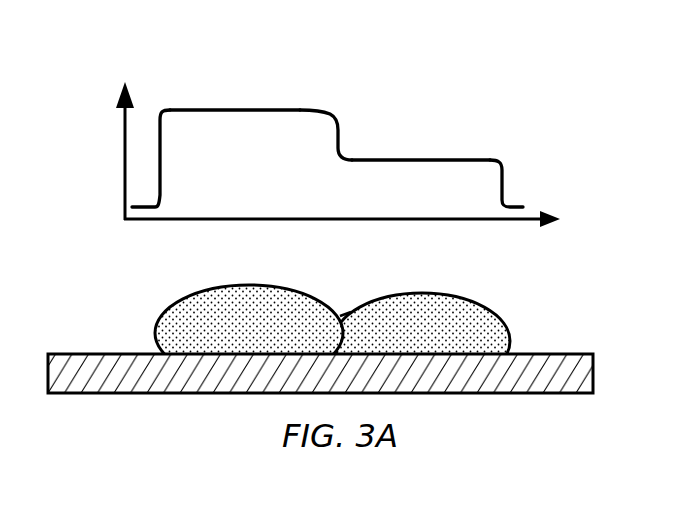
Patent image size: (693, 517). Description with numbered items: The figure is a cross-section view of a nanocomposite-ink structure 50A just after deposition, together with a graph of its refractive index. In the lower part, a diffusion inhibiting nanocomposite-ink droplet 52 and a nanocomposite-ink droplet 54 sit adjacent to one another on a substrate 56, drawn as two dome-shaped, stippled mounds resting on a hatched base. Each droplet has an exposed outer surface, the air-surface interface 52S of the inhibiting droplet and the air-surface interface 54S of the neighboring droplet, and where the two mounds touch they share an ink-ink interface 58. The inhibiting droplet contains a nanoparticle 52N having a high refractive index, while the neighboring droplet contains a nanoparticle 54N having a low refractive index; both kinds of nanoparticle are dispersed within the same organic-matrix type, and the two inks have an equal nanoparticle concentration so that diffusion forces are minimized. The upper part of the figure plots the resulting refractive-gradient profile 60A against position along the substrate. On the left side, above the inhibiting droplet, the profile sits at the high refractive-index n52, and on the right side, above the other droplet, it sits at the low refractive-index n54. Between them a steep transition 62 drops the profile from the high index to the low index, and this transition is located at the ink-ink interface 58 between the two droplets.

The nanocomposite-ink structure 50A is at (603, 116).
The diffusion inhibiting nanocomposite-ink droplet 52 is at (217, 306).
The nanoparticle 52N is at (249, 333).
The air-surface interface 52S is at (170, 303).
The nanocomposite-ink droplet 54 is at (452, 317).
The nanoparticle 54N is at (422, 341).
The air-surface interface 54S is at (493, 318).
The substrate 56 is at (593, 375).
The ink-ink interface 58 is at (346, 308).
The refractive-gradient profile 60A is at (327, 114).
The steep transition 62 is at (340, 142).
The refractive-index n52 is at (208, 110).
The refractive-index n54 is at (443, 160).